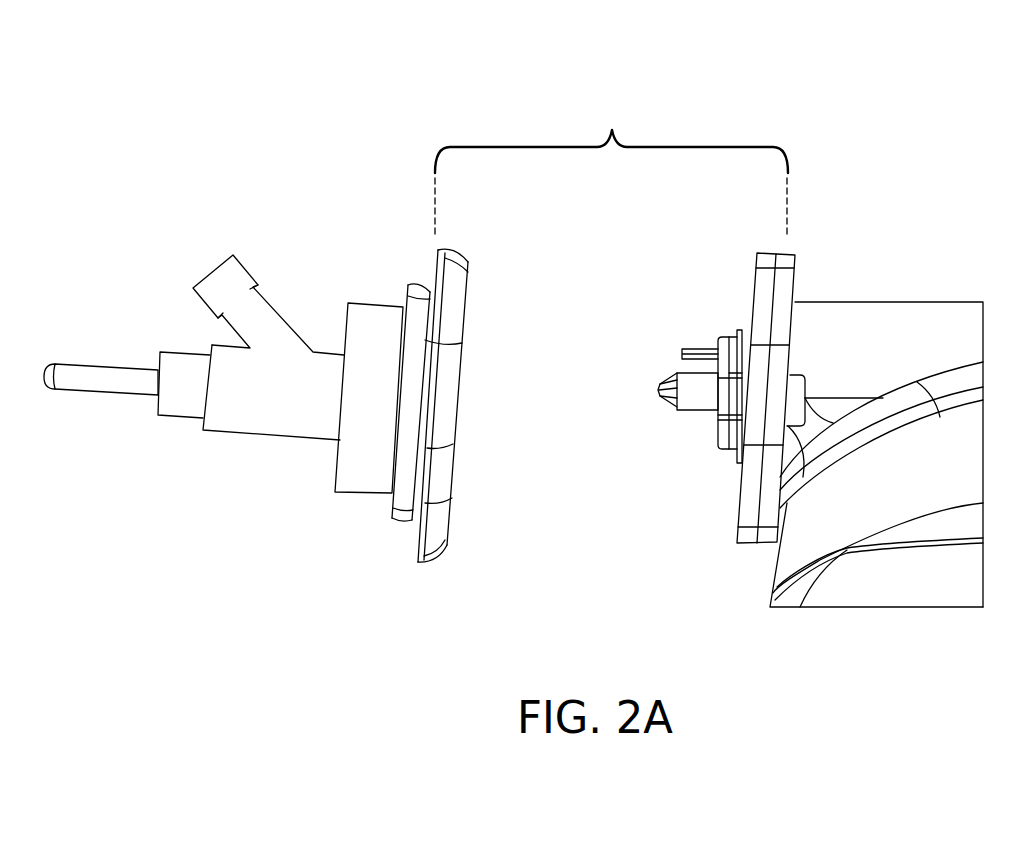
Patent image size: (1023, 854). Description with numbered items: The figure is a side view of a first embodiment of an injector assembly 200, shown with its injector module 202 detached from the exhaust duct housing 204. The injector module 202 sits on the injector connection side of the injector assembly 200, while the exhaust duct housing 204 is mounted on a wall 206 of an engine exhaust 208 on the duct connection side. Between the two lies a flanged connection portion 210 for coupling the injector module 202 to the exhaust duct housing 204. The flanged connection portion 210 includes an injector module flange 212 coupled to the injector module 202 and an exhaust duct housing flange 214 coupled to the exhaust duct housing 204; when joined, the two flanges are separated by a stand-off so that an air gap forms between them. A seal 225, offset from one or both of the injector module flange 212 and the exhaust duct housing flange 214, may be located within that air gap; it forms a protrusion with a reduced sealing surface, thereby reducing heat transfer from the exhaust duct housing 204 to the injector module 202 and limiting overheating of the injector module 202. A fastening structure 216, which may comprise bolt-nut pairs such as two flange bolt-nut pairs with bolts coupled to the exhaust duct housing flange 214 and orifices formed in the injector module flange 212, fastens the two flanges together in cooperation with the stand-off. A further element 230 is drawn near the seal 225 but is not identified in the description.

The injector assembly 200 is at (850, 75).
The injector module 202 is at (287, 140).
The exhaust duct housing 204 is at (910, 180).
The wall 206 is at (953, 481).
The engine exhaust 208 is at (927, 600).
The flanged connection portion 210 is at (611, 167).
The injector module flange 212 is at (453, 247).
The exhaust duct housing flange 214 is at (758, 250).
The fastening structure 216 is at (703, 400).
The seal 225 is at (717, 450).
The pin 230 is at (695, 350).